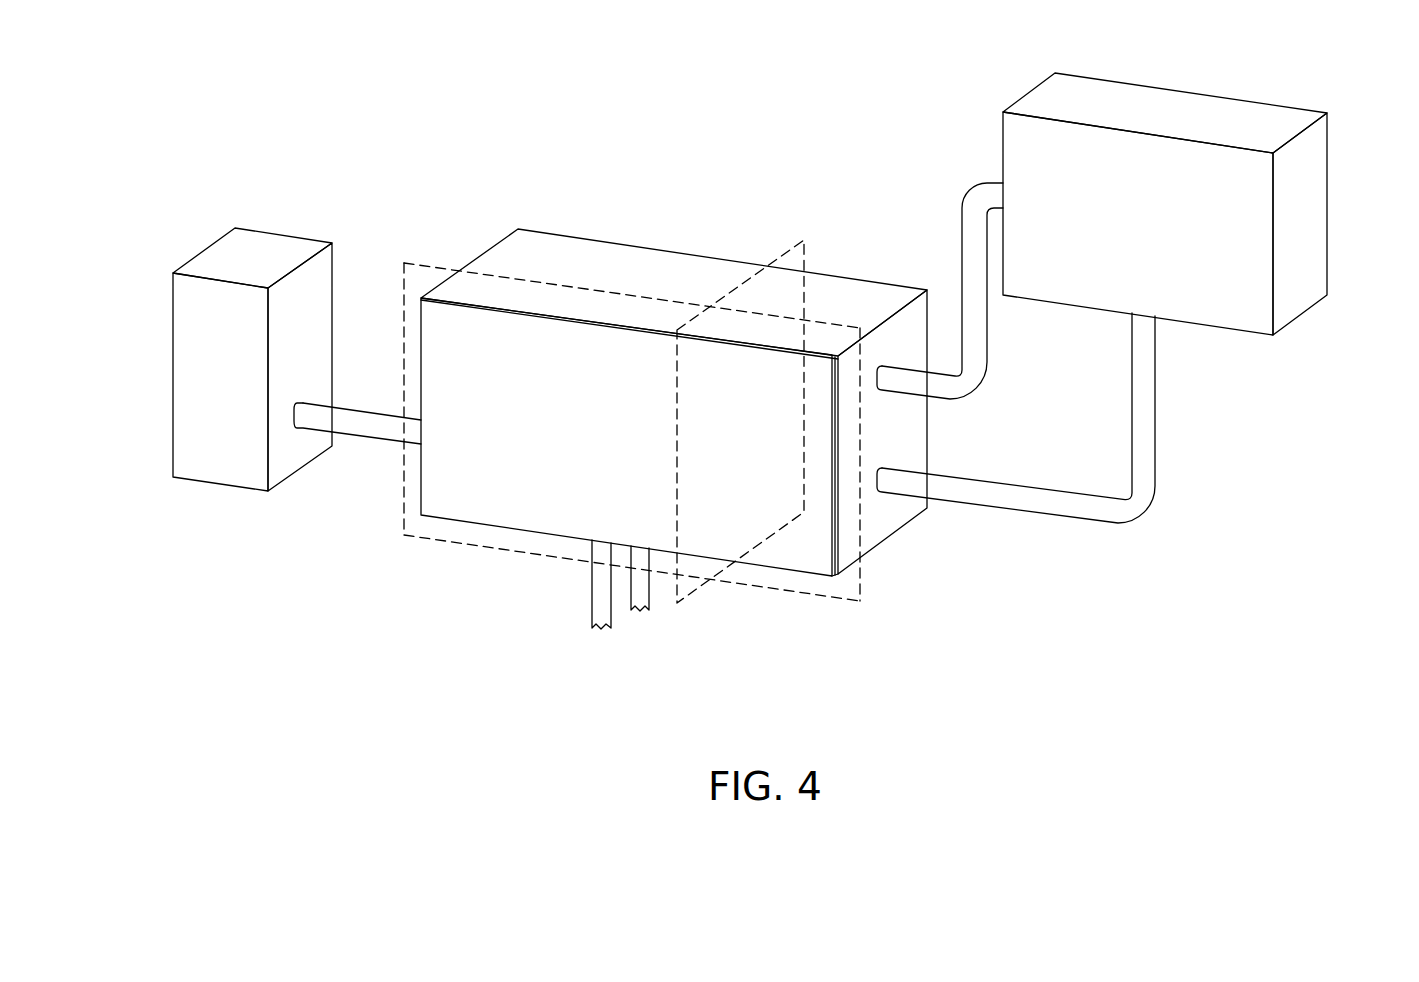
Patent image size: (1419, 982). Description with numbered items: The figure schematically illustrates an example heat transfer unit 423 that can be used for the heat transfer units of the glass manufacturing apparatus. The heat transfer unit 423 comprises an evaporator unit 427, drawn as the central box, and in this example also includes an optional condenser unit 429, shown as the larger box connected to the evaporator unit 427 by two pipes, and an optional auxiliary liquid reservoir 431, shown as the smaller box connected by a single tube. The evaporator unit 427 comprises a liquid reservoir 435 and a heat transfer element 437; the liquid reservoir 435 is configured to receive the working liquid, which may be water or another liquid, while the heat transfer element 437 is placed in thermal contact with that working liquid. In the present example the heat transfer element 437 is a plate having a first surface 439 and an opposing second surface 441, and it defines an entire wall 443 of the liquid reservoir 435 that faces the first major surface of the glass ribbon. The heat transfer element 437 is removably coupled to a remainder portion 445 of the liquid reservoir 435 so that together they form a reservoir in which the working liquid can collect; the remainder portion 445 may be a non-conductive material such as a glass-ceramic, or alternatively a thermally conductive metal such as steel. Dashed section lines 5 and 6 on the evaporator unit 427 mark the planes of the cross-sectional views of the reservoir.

The section line 5- 5 is at (861, 587).
The section line 6- 6 is at (804, 240).
The heat transfer unit 423 is at (422, 600).
The evaporator unit 427 is at (853, 256).
The condenser unit 429 is at (1328, 205).
The auxiliary liquid reservoir 431 is at (173, 378).
The liquid reservoir 435 is at (489, 214).
The heat transfer element 437 is at (421, 482).
The first surface 439 is at (568, 446).
The second surface 441 is at (537, 313).
The wall 443 is at (421, 358).
The remainder portion 445 is at (590, 240).